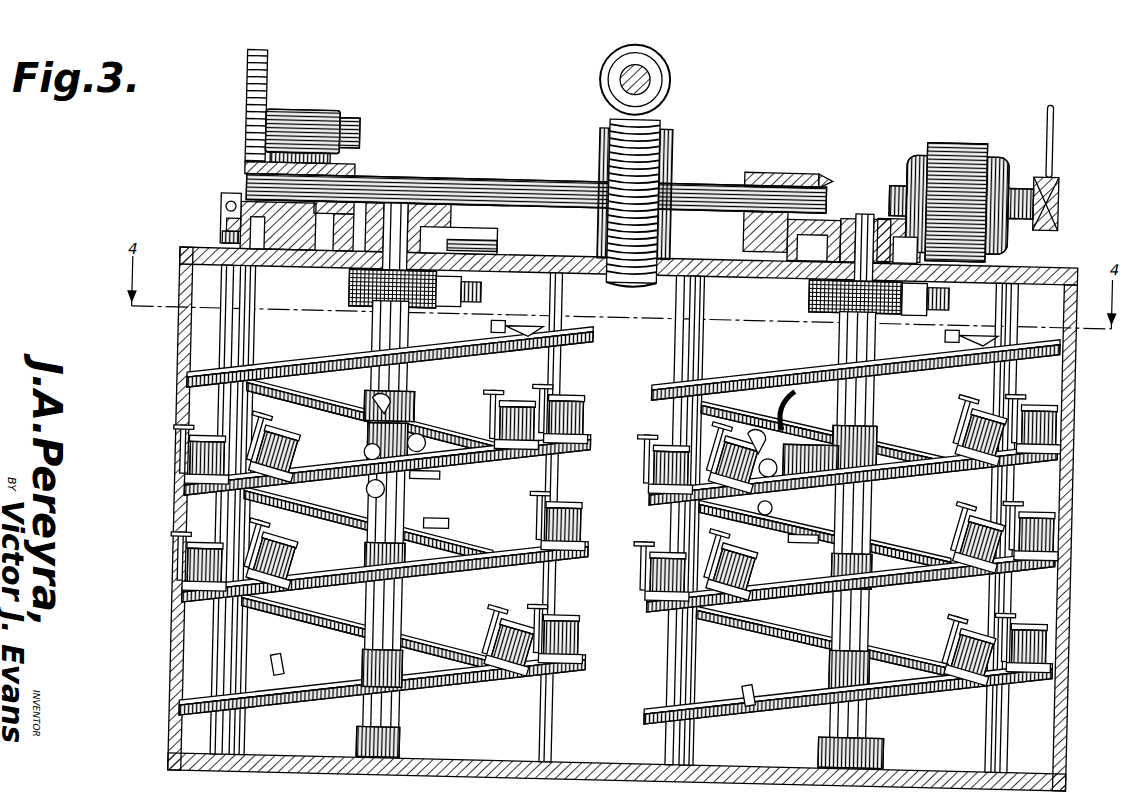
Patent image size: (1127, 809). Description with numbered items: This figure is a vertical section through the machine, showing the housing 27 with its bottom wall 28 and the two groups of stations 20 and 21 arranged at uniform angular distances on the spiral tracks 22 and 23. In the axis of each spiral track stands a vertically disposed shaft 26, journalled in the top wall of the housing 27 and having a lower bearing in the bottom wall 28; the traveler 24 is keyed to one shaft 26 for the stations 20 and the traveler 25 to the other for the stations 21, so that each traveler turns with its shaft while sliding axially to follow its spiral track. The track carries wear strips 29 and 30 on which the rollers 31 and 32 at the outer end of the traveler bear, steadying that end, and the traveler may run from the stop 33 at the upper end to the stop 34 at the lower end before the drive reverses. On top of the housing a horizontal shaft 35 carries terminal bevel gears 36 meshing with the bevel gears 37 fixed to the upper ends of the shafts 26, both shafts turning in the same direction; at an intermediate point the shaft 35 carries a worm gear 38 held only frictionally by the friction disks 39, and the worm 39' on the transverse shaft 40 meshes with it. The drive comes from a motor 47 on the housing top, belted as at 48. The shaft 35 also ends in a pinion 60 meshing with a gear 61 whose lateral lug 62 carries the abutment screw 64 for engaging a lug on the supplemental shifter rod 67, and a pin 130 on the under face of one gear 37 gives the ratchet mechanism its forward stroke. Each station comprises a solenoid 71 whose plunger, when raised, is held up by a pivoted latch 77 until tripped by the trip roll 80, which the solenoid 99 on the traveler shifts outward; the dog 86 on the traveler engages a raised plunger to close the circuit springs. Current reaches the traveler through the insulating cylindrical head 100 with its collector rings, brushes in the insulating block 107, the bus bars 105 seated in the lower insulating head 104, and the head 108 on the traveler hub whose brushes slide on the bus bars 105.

The stations 20 is at (656, 576).
The stations 21 is at (283, 440).
The spiral track 22 is at (914, 580).
The spiral track 23 is at (440, 575).
The traveler 24 is at (825, 430).
The traveler 25 is at (418, 392).
The vertically disposed shaft 26 is at (400, 200).
The housing 27 is at (1035, 262).
The bottom wall 28 is at (1062, 758).
The wear strip 29 is at (442, 512).
The wear strip 30 is at (926, 465).
The roller 31 is at (369, 447).
The roller 32 is at (375, 496).
The stop 33 is at (490, 308).
The stop 34 is at (285, 655).
The horizontal shaft 35 is at (700, 180).
The bevel gear 36 is at (350, 165).
The bevel gear 37 is at (445, 200).
The worm gear 38 is at (665, 110).
The friction disk 39 is at (628, 190).
The worm 39' is at (648, 73).
The transverse shaft 40 is at (628, 60).
The motor 47 is at (945, 125).
The belt 48 is at (1052, 118).
The pinion 60 is at (243, 168).
The gear 61 is at (265, 74).
The lateral lug 62 is at (220, 191).
The abutment screw 64 is at (222, 215).
The supplemental shifter rod 67 is at (258, 250).
The solenoid 71 is at (582, 640).
The pivoted latch 77 is at (503, 398).
The trip roll 80 is at (446, 470).
The dog 86 is at (378, 398).
The solenoid 99 is at (430, 430).
The cylindrical head 100 is at (350, 285).
The insulating head 104 is at (412, 736).
The bus bar 105 is at (412, 322).
The insulating block 107 is at (490, 250).
The head 108 is at (885, 412).
The pin 130 is at (462, 230).